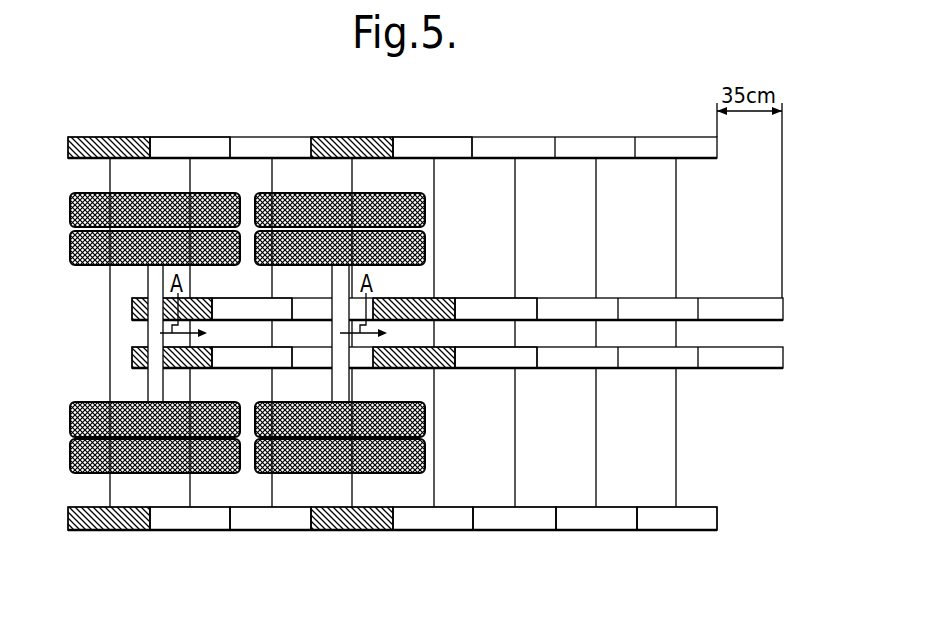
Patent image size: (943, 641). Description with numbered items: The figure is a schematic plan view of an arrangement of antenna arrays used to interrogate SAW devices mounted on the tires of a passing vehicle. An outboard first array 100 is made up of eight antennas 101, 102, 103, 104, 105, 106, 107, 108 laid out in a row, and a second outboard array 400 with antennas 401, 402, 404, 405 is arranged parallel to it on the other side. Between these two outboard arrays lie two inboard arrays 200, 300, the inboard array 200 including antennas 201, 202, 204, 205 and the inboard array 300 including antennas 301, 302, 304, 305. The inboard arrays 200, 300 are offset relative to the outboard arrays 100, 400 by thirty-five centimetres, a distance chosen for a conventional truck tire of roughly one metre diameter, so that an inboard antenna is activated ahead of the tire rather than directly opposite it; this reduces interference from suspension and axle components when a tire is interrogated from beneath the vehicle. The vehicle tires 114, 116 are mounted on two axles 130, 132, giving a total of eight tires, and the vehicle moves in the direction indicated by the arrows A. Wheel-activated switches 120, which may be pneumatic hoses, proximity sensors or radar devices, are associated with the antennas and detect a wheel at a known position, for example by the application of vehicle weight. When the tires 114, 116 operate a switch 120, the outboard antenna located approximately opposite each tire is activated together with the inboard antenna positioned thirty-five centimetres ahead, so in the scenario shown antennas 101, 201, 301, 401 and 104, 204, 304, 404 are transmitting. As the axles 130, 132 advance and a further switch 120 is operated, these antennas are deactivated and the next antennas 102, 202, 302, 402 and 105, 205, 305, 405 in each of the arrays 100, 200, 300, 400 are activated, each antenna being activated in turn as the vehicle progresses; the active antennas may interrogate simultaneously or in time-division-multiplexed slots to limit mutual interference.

The first array 100 is at (724, 501).
The first antenna 101 is at (110, 522).
The antenna 102 is at (192, 522).
The antenna 103 is at (272, 522).
The fourth antenna 104 is at (354, 522).
The antenna 105 is at (436, 522).
The antenna 106 is at (519, 522).
The antenna 107 is at (599, 522).
The antenna 108 is at (679, 522).
The tire 114 is at (72, 458).
The tire 116 is at (425, 456).
The switches 120 is at (352, 165).
The axle 130 is at (342, 388).
The axle 132 is at (155, 383).
The inboard array 200 is at (792, 362).
The antenna 201 is at (132, 358).
The antenna 202 is at (252, 331).
The antenna 204 is at (446, 358).
The antenna 205 is at (518, 358).
The inboard array 300 is at (790, 298).
The antenna 301 is at (132, 306).
The antenna 302 is at (248, 306).
The antenna 304 is at (445, 310).
The antenna 305 is at (530, 308).
The outboard array 400 is at (722, 160).
The antenna 401 is at (112, 137).
The antenna 402 is at (195, 146).
The antenna 404 is at (345, 137).
The antenna 405 is at (429, 145).